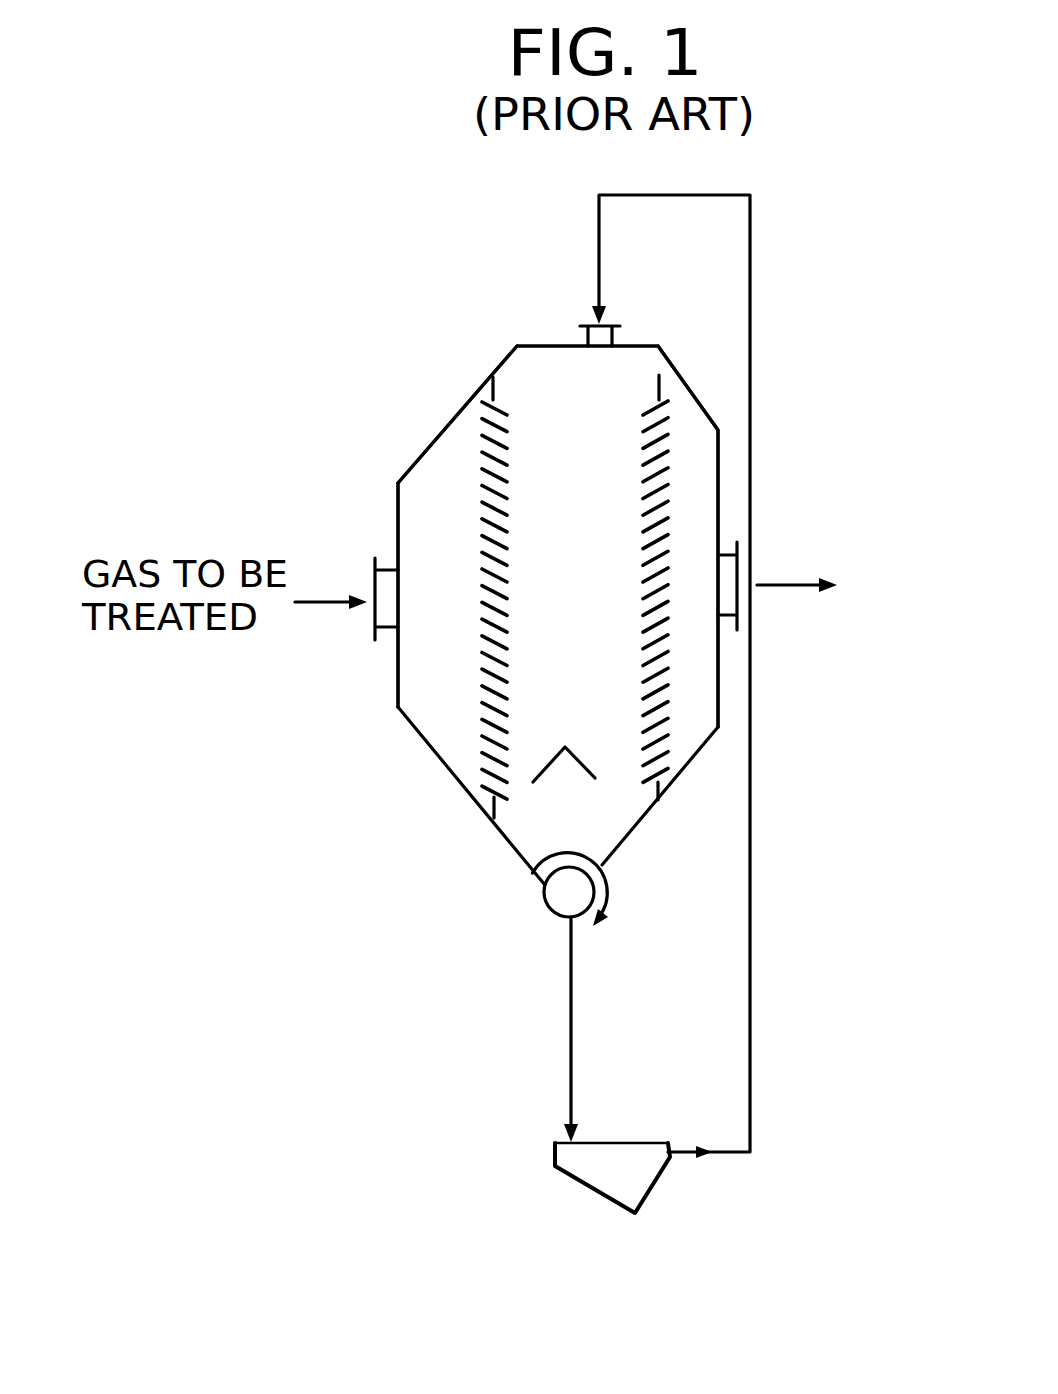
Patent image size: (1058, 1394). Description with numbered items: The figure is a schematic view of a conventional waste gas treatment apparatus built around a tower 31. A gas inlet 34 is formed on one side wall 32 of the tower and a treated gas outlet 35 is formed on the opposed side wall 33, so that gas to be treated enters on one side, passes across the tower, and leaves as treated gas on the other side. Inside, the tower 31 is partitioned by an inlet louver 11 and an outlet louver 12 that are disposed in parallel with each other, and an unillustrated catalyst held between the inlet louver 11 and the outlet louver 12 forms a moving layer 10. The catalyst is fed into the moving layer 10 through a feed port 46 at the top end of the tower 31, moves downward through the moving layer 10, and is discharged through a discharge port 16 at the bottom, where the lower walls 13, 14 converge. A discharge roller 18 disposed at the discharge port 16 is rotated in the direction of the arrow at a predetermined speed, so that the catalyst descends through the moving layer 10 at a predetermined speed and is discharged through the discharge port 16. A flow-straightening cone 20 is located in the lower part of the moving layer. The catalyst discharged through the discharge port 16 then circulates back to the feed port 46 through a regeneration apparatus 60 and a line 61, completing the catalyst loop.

The moving layer 10 is at (548, 686).
The inlet louver 11 is at (480, 477).
The outlet louver 12 is at (672, 420).
The lower wall 13 is at (507, 842).
The lower wall 14 is at (633, 837).
The discharge port 16 is at (528, 863).
The discharge roller 18 is at (562, 905).
The flow-straightening cone 20 is at (541, 772).
The tower 31 is at (736, 442).
The side wall 32 is at (418, 460).
The side wall 33 is at (720, 500).
The gas inlet 34 is at (383, 567).
The treated gas outlet 35 is at (727, 615).
The feed port 46 is at (609, 334).
The regeneration apparatus 60 is at (595, 1180).
The line 61 is at (730, 1152).